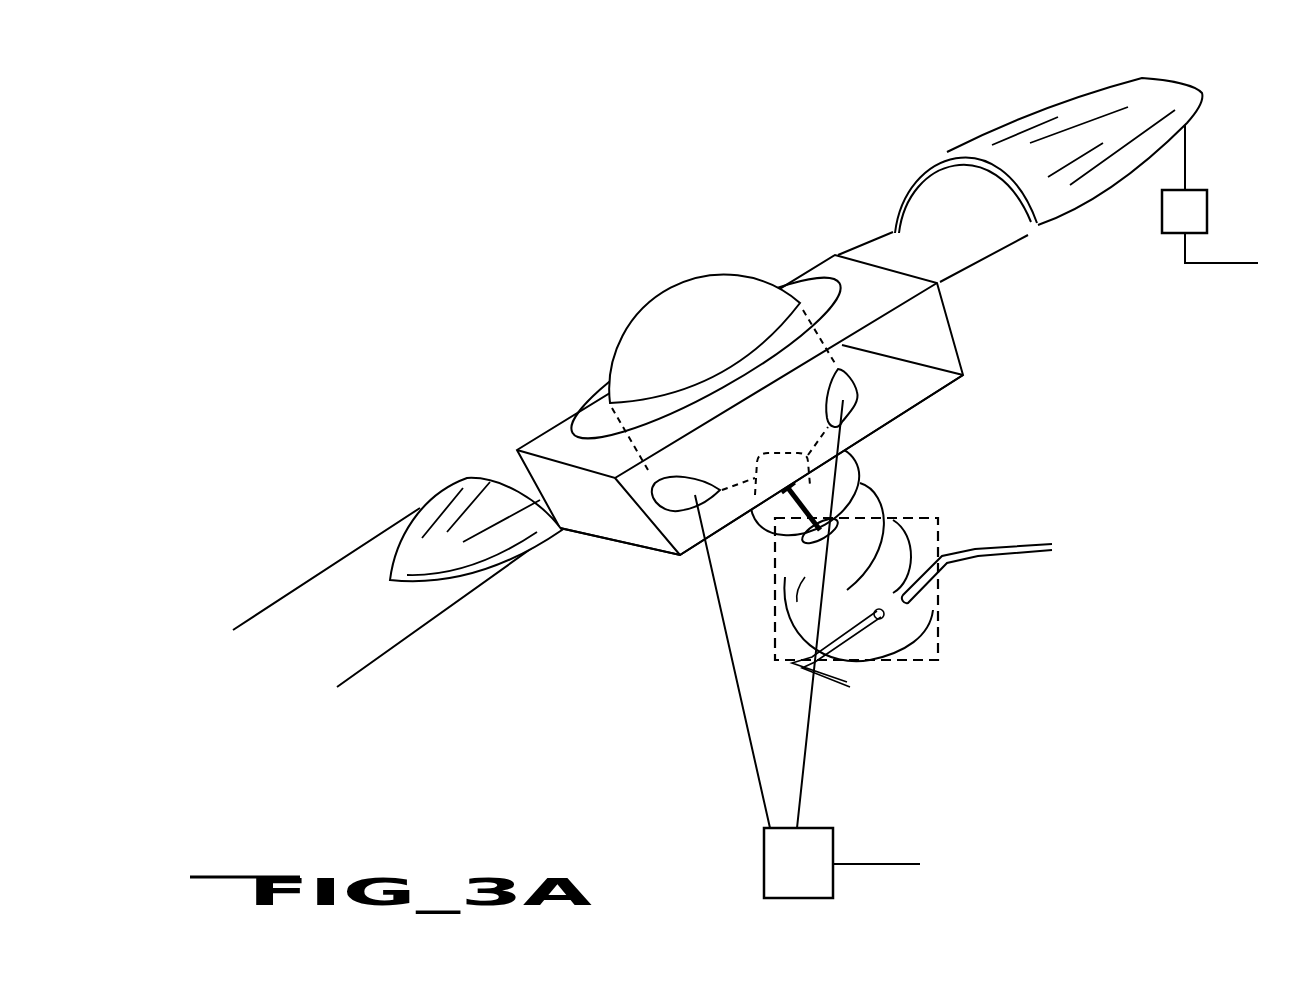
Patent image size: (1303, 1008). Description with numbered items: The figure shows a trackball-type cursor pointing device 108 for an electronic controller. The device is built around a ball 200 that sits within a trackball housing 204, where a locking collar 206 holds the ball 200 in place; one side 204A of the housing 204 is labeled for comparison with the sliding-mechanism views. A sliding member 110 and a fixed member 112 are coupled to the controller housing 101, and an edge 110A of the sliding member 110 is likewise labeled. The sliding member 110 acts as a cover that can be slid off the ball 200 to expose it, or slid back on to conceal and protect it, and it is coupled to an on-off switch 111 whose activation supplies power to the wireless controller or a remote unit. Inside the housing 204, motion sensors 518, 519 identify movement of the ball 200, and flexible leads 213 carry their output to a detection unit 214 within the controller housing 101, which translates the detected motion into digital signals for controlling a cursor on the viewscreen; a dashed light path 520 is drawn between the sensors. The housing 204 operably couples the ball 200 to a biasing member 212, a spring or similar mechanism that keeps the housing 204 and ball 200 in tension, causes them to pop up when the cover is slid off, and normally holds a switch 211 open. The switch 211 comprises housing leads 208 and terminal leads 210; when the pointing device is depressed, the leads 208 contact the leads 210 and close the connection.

The controller housing 101 is at (297, 658).
The cursor pointing device 108 is at (449, 133).
The sliding member 110 is at (1057, 110).
The edge of the sliding member 110A is at (990, 163).
The on-off switch 111 is at (1208, 212).
The fixed member 112 is at (433, 497).
The ball 200 is at (663, 283).
The trackball housing 204 is at (868, 295).
The side of the housing 204A is at (692, 546).
The locking collar 206 is at (583, 412).
The housing leads 208 is at (803, 538).
The terminal leads 210 is at (1012, 545).
The switch 211 is at (925, 518).
The biasing member 212 is at (880, 492).
The flexible leads 213 is at (747, 732).
The detection unit 214 is at (822, 827).
The motion sensor 518 is at (685, 488).
The motion sensor 519 is at (853, 392).
The light path 520 is at (758, 453).